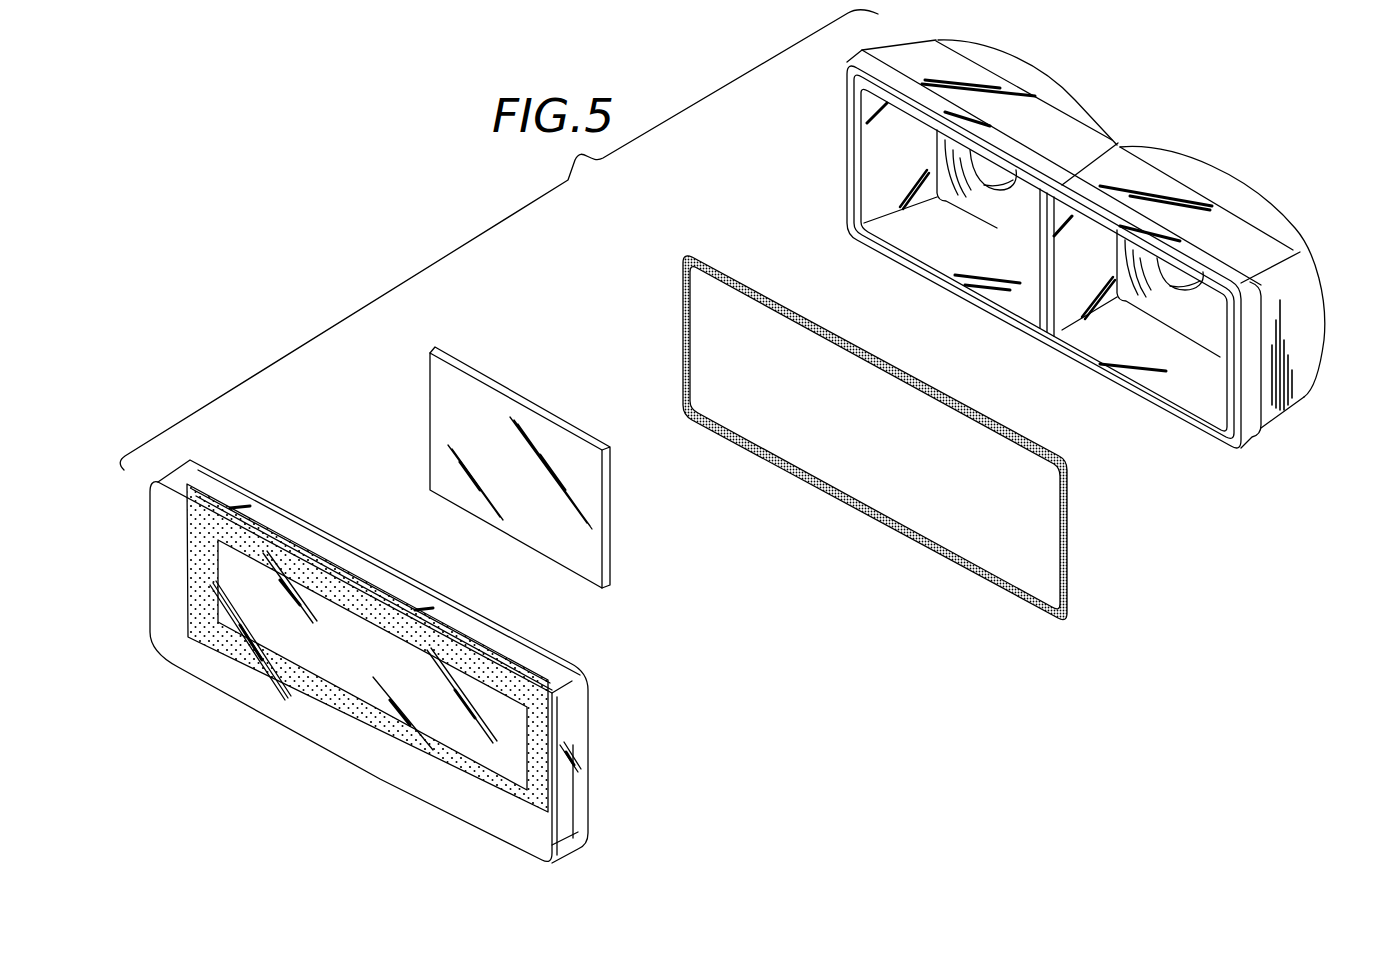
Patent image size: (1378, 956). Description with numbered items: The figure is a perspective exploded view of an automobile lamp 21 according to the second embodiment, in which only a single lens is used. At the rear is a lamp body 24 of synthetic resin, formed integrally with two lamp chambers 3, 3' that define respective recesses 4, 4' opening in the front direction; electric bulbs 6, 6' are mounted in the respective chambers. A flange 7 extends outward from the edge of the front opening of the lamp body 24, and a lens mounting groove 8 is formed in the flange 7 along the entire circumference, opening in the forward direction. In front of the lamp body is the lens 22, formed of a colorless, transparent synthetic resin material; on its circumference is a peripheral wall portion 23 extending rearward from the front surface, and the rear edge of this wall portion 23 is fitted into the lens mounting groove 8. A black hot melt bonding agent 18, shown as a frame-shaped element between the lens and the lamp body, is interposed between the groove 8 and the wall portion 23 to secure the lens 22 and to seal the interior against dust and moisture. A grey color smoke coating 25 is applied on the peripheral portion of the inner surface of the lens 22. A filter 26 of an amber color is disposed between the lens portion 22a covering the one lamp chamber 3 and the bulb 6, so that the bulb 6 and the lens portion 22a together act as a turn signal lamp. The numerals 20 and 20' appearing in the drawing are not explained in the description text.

The automobile lamp 21 is at (1252, 520).
The lamp body 24 is at (1182, 154).
The lens mounting groove 8 is at (852, 118).
The flange 7 is at (1258, 427).
The lamp chamber 3 is at (900, 179).
The lamp chamber 3' is at (1141, 346).
The recess 4 is at (952, 199).
The recess 4' is at (1134, 294).
The electric bulb 6 is at (996, 191).
The electric bulb 6' is at (1188, 297).
The hot melt bonding agent 18 is at (873, 523).
The filter 26 is at (430, 425).
The lens 20 is at (353, 672).
The lens rim 20' is at (373, 673).
The lens 22 is at (150, 492).
The lens portion 22a is at (230, 582).
The smoke coating 25 is at (318, 553).
The peripheral wall portion 23 is at (590, 726).